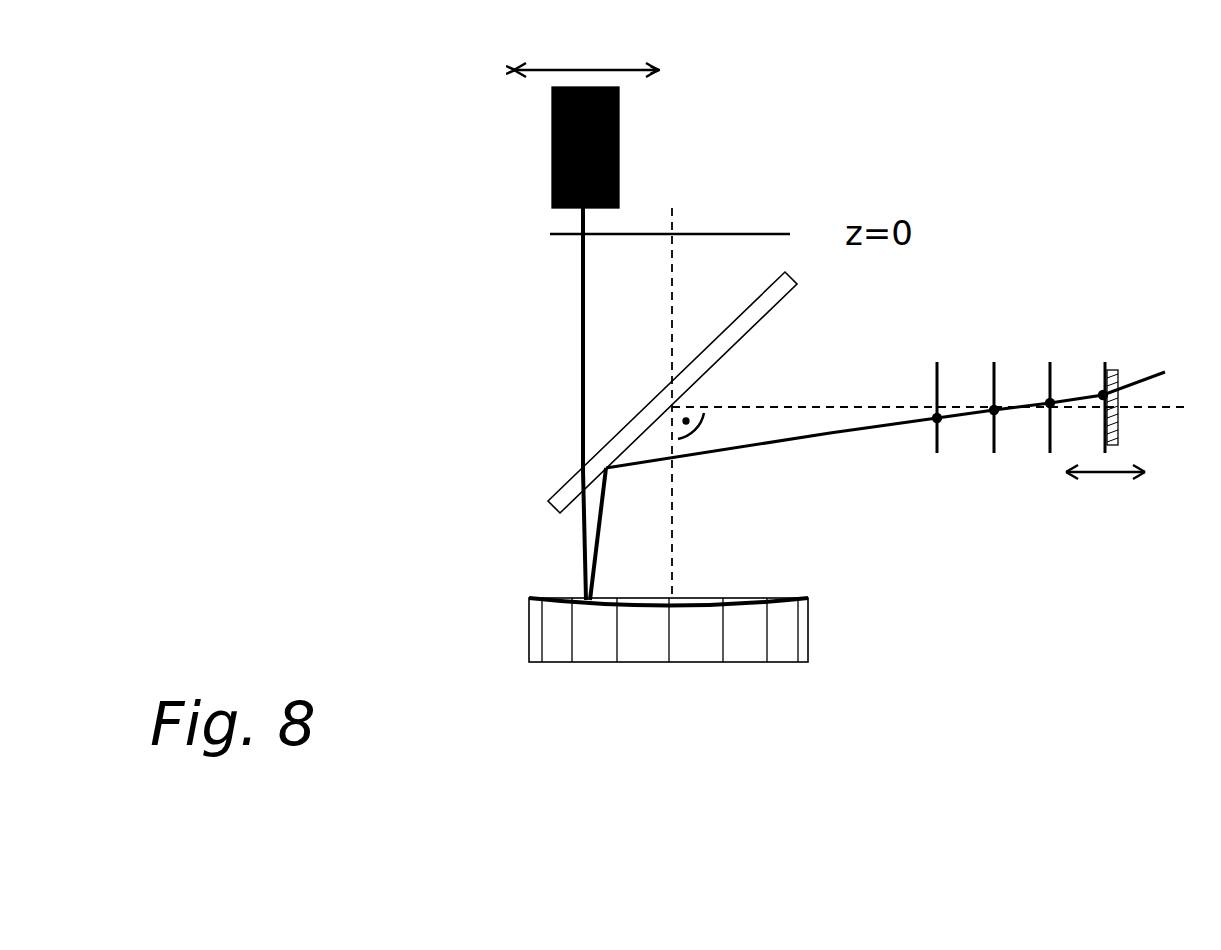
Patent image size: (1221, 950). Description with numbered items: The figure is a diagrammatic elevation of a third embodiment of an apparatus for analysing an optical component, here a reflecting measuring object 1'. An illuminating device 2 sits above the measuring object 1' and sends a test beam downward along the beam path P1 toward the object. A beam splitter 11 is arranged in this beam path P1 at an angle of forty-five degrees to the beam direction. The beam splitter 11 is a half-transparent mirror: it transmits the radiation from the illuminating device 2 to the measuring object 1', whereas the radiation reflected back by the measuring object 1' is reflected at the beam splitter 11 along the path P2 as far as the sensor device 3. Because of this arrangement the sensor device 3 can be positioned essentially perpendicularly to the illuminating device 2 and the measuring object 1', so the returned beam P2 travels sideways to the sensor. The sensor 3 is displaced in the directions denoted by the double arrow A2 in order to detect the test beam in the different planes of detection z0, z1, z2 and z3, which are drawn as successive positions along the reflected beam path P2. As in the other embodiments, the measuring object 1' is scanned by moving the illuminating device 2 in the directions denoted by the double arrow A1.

The reflecting measuring object 1' is at (598, 601).
The illuminating device 2 is at (630, 117).
The sensor device 3 is at (1158, 397).
The beam splitter 11 is at (762, 323).
The double arrow A1 is at (586, 45).
The double arrow A2 is at (1105, 509).
The plane of detection z0 is at (934, 385).
The plane of detection z1 is at (992, 385).
The plane of detection z2 is at (1052, 385).
The plane of detection z3 is at (1114, 385).
The beam path P1 is at (577, 302).
The reflected beam path P2 is at (790, 447).